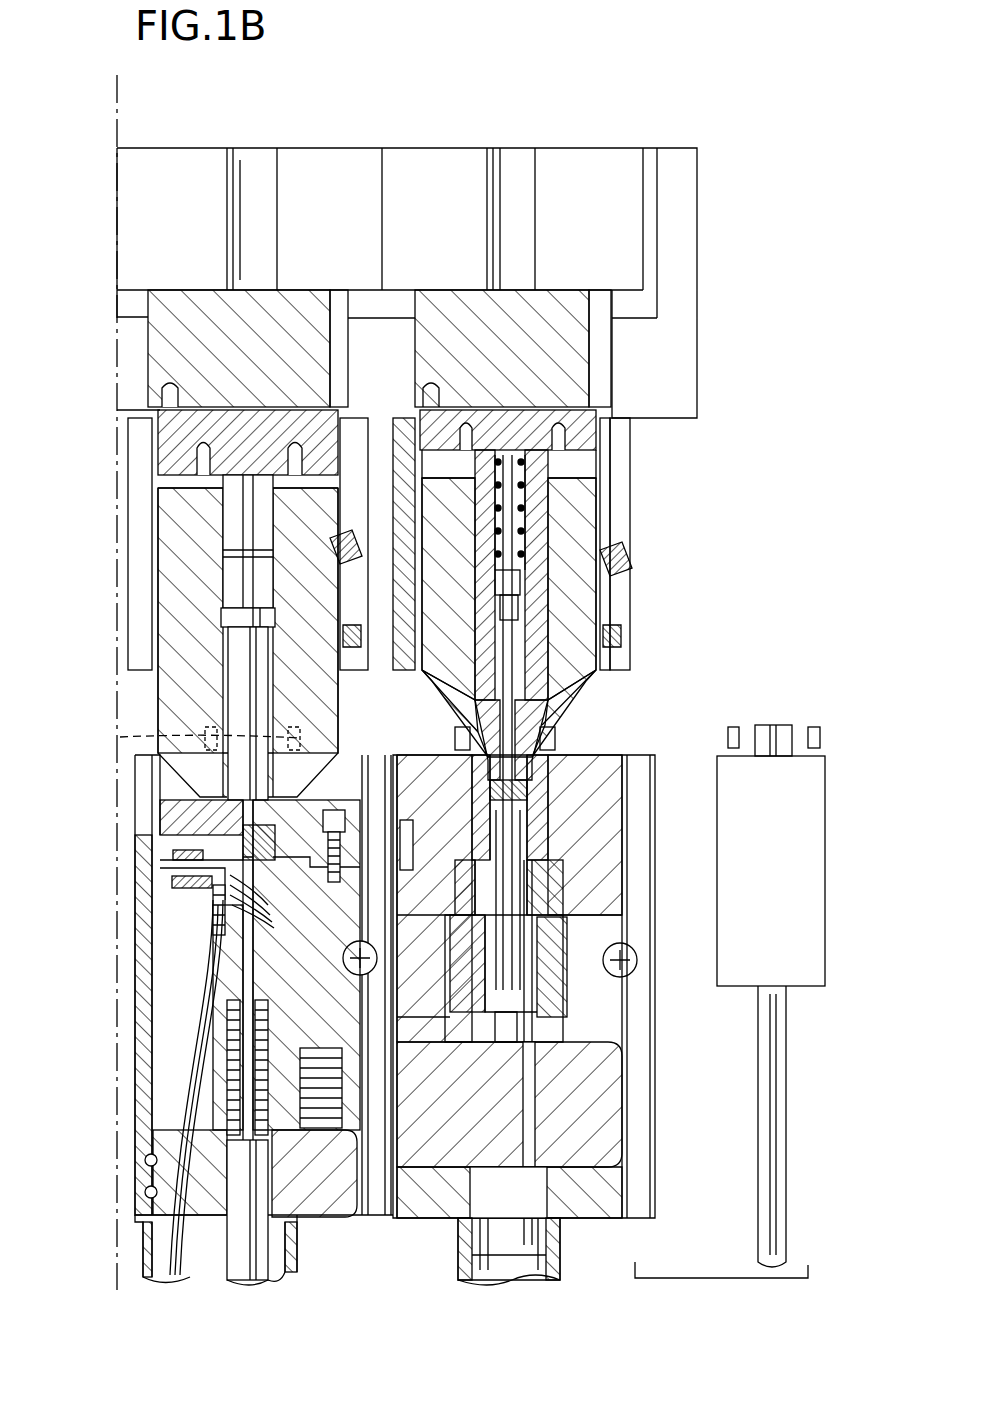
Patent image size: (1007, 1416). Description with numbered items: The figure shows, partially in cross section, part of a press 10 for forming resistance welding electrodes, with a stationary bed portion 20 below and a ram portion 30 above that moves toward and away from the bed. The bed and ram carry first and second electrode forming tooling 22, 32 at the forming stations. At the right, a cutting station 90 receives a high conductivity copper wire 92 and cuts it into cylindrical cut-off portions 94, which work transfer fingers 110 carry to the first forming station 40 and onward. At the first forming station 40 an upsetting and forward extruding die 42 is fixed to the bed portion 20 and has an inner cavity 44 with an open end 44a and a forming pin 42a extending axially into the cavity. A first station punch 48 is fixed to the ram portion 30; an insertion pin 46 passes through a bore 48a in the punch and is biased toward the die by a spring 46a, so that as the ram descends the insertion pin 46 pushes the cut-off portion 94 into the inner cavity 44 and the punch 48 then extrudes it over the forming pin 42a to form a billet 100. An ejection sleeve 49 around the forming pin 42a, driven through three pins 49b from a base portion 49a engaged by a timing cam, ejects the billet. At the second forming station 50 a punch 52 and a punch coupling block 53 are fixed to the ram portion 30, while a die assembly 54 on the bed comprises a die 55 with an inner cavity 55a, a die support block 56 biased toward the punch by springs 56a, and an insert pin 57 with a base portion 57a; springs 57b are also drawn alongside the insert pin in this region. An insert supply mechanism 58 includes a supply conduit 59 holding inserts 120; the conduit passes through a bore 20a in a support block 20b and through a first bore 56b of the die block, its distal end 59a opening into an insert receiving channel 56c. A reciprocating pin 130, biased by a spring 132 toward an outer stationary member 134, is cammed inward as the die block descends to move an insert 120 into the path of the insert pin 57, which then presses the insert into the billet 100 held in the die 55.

The press 10 is at (652, 88).
The ram portion 30 is at (700, 360).
The second forming station 50 is at (110, 672).
The punch coupling block 53 is at (165, 706).
The work transfer fingers 110 is at (836, 716).
The first forming station 40 is at (622, 695).
The second electrode forming tooling 32 is at (650, 618).
The first station punch 48 is at (522, 712).
The spring 46a is at (525, 510).
The insertion pin 46 is at (505, 632).
The bore 48a is at (500, 698).
The open end 44a is at (490, 757).
The first electrode forming tooling 22 is at (638, 745).
The inner cavity 44 is at (520, 795).
The billet 100 is at (520, 778).
The upsetting and forward extruding die 42 is at (560, 836).
The forming pin 42a is at (512, 892).
The ejection sleeve 49 is at (520, 962).
The bed portion 20 is at (640, 1072).
The base portion 49a is at (512, 1272).
The pins 49b is at (528, 1245).
The die assembly 54 is at (110, 893).
The punch 52 is at (200, 802).
The insert pin 57 is at (262, 962).
The inner cavity 55a is at (272, 815).
The die 55 is at (380, 822).
The die support block 56 is at (170, 814).
The insert receiving channel 56c is at (205, 836).
The spring 132 is at (195, 854).
The reciprocating pin 130 is at (215, 870).
The distal end 59a is at (200, 900).
The insert supply mechanism 58 is at (222, 900).
The inserts 120 is at (258, 903).
The outer stationary member 134 is at (140, 1000).
The first bore 56b is at (200, 1045).
The supply conduit 59 is at (205, 1136).
The bore 20a is at (228, 1162).
The springs 57b is at (262, 1037).
The springs 56a is at (355, 1085).
The base portion 57a is at (245, 1258).
The support block 20b is at (333, 1198).
The cutting station 90 is at (855, 800).
The cut-off portions 94 is at (772, 725).
The copper wire 92 is at (780, 1088).